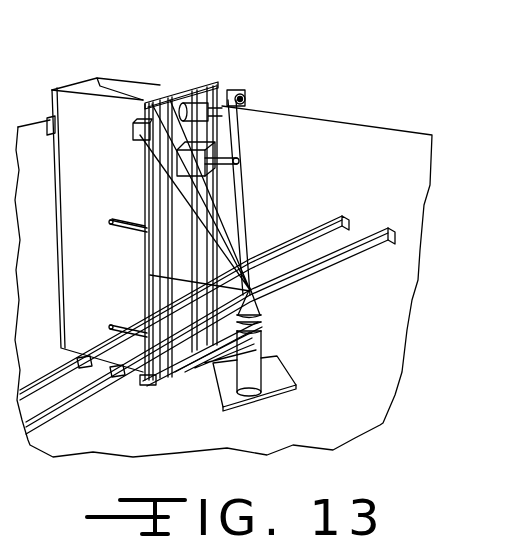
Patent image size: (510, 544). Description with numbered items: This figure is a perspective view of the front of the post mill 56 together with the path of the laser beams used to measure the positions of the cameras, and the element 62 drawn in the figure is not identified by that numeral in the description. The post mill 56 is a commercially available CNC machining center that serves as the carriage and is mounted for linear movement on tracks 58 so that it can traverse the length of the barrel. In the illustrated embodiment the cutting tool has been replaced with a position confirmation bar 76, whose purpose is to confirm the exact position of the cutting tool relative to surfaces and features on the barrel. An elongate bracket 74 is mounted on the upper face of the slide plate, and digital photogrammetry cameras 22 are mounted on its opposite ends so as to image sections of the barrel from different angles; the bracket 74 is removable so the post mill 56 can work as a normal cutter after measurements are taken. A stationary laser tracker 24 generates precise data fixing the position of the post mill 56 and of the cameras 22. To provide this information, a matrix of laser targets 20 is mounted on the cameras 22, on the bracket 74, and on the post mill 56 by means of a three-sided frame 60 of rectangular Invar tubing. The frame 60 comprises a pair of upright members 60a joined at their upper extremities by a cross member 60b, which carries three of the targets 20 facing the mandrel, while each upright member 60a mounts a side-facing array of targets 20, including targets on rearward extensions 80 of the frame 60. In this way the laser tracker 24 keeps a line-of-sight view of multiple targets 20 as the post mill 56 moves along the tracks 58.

The laser targets 20 is at (107, 232).
The digital photogrammetry cameras 22 is at (145, 122).
The laser tracker 24 is at (252, 365).
The post mill 56 is at (78, 104).
The tracks 58 is at (343, 218).
The three-sided frame 60 is at (168, 82).
The upright members 60a is at (146, 366).
The cross member 60b is at (218, 82).
The cables / tilted pole 62 is at (230, 82).
The elongate bracket 74 is at (165, 84).
The position confirmation bar 76 is at (222, 140).
The rearward extensions 80 is at (127, 221).